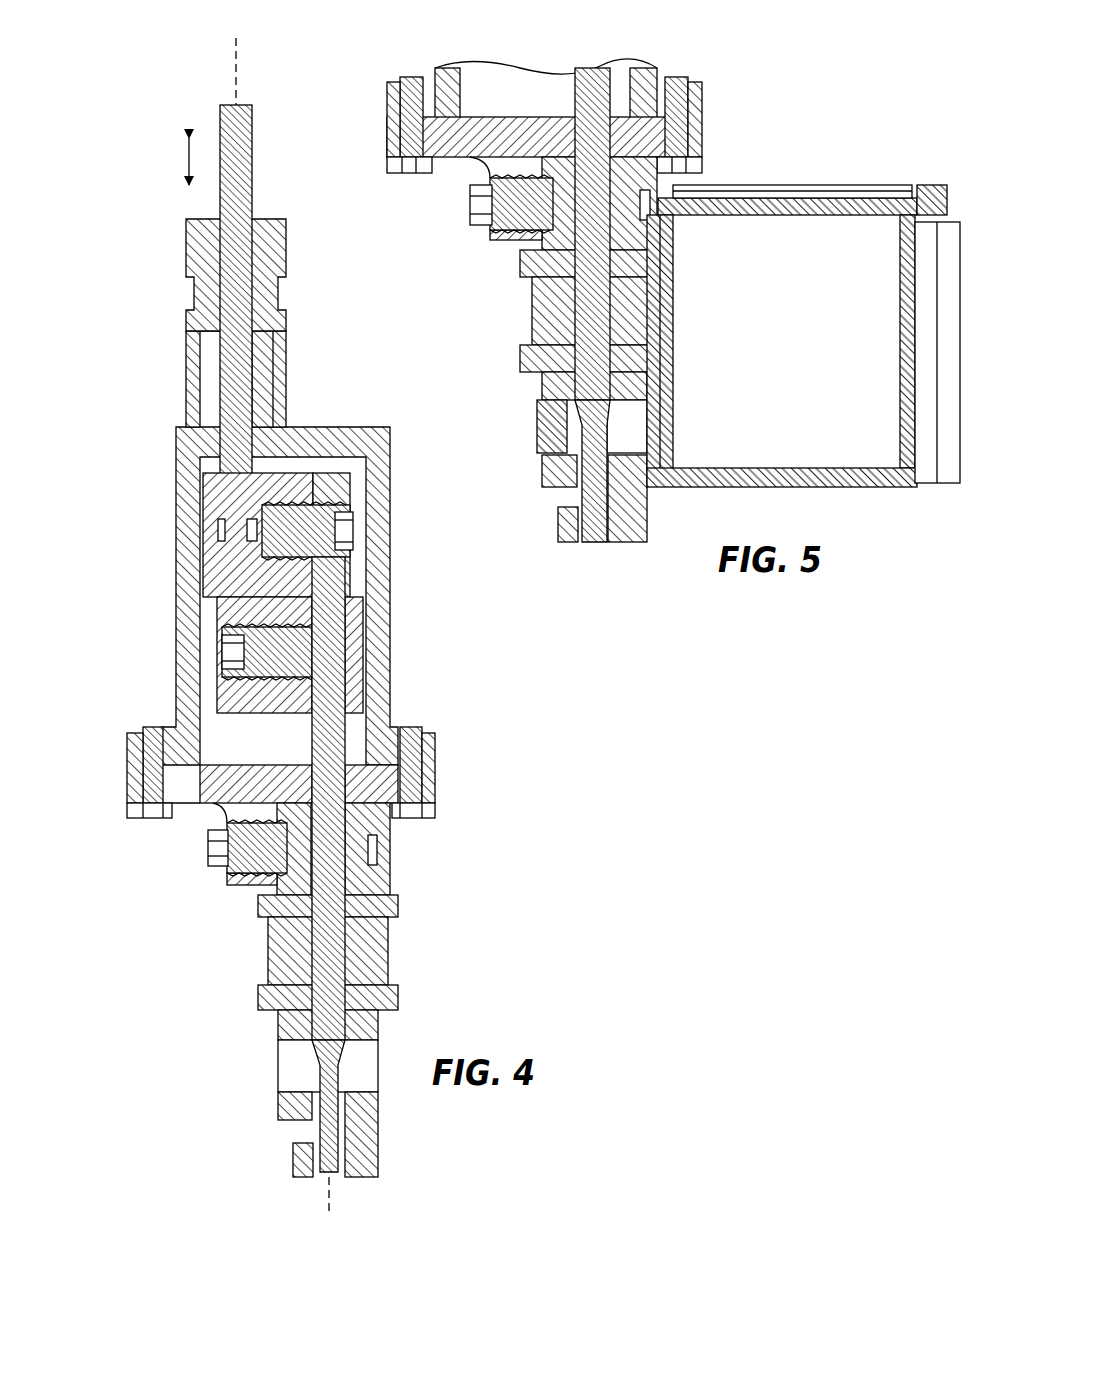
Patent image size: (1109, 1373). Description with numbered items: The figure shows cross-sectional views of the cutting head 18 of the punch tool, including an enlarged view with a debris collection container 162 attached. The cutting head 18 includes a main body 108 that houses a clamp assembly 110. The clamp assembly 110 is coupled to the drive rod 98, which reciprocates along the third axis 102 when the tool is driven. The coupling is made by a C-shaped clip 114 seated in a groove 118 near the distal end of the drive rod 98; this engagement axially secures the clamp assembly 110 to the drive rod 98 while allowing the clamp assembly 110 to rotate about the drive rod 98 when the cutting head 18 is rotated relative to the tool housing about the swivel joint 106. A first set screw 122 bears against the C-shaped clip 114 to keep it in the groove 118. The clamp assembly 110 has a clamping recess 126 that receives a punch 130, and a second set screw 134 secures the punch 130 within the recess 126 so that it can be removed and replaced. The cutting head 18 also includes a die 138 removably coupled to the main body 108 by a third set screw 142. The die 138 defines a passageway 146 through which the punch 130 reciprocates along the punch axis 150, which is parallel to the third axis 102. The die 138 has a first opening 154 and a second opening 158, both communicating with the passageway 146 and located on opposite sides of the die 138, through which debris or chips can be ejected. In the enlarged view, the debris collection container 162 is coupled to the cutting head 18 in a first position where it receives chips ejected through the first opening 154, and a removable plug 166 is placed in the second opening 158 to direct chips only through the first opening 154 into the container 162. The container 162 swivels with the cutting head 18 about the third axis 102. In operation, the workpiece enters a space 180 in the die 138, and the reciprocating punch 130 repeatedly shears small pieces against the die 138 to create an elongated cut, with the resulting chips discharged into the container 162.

In FIG. 4, the cutting head 18 is at (517, 823).
In FIG. 4, the drive rod 98 is at (252, 185).
In FIG. 4, the third axis 102 is at (232, 65).
In FIG. 4, the swivel joint 106 is at (186, 265).
In FIG. 4, the main body 108 is at (178, 697).
In FIG. 5, the main body 108 is at (543, 108).
In FIG. 4, the clamp assembly 110 is at (280, 470).
In FIG. 4, the C-shaped clip 114 is at (250, 530).
In FIG. 4, the groove 118 is at (218, 528).
In FIG. 4, the first set screw 122 is at (355, 520).
In FIG. 4, the clamping recess 126 is at (340, 640).
In FIG. 4, the punch 130 is at (345, 737).
In FIG. 5, the punch 130 is at (583, 265).
In FIG. 4, the second set screw 134 is at (225, 640).
In FIG. 4, the die 138 is at (268, 960).
In FIG. 5, the die 138 is at (520, 352).
In FIG. 4, the third set screw 142 is at (208, 865).
In FIG. 5, the third set screw 142 is at (470, 210).
In FIG. 4, the passageway 146 is at (340, 960).
In FIG. 5, the passageway 146 is at (577, 313).
In FIG. 4, the punch axis 150 is at (332, 1185).
In FIG. 4, the first opening 154 is at (362, 1040).
In FIG. 5, the first opening 154 is at (625, 395).
In FIG. 4, the second opening 158 is at (285, 1097).
In FIG. 5, the second opening 158 is at (548, 445).
In FIG. 5, the debris collection container 162 is at (798, 185).
In FIG. 5, the removable plug 166 is at (535, 425).
In FIG. 4, the space 180 is at (283, 1133).
In FIG. 5, the space 180 is at (548, 503).